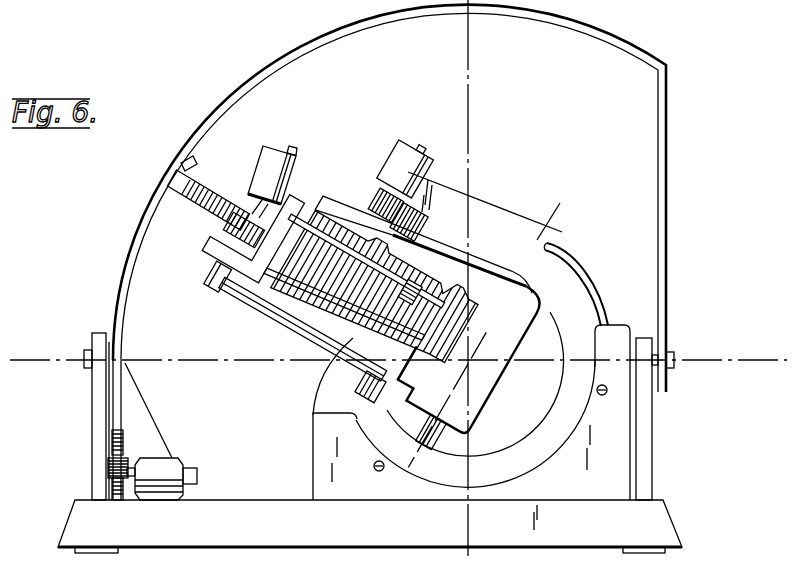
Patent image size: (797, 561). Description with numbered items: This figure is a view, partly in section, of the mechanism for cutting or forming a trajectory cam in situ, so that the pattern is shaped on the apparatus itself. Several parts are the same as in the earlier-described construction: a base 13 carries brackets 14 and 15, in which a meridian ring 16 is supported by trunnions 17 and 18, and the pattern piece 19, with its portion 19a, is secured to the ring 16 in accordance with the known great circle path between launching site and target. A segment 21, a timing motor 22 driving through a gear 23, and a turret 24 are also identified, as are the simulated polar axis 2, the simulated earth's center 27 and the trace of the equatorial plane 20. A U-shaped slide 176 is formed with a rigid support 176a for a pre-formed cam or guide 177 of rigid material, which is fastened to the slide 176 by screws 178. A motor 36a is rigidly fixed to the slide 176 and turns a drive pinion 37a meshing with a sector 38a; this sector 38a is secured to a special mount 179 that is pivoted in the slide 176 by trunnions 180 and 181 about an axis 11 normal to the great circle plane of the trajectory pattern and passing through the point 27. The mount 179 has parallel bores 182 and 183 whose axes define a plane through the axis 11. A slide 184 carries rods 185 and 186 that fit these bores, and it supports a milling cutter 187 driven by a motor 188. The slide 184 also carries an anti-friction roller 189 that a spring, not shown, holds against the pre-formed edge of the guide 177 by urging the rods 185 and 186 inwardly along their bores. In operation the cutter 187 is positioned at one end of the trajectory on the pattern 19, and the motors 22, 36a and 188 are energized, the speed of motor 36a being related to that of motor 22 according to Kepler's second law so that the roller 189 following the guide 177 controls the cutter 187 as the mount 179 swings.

The simulated polar axis 2 is at (48, 357).
The axis 11 is at (562, 196).
The base 13 is at (660, 524).
The bracket 14 is at (98, 402).
The bracket 15 is at (646, 443).
The meridian ring 16 is at (396, 18).
The trunnion 17 is at (80, 354).
The trunnion 18 is at (672, 352).
The pattern piece 19 is at (221, 210).
The lug 19a is at (183, 166).
The trace of equatorial plane 20 is at (468, 80).
The segment 21 is at (123, 452).
The timing motor 22 is at (176, 466).
The gear 23 is at (108, 477).
The turret 24 is at (314, 470).
The simulated earth's center 27 is at (470, 362).
The motor 36a is at (393, 156).
The drive pinion 37a is at (375, 200).
The sector 38a is at (442, 232).
The U-shaped slide 176 is at (560, 244).
The rigid support 176a is at (322, 372).
The pre-formed cam or guide 177 is at (244, 312).
The screws 178 is at (357, 368).
The mount 179 is at (522, 332).
The trunnion 180 is at (522, 282).
The trunnion 181 is at (432, 441).
The bore 182 is at (420, 372).
The bore 183 is at (462, 310).
The slide 184 is at (213, 250).
The rod 185 is at (337, 307).
The rod 186 is at (400, 283).
The milling cutter 187 is at (246, 213).
The motor 188 is at (265, 160).
The anti-friction roller 189 is at (212, 280).